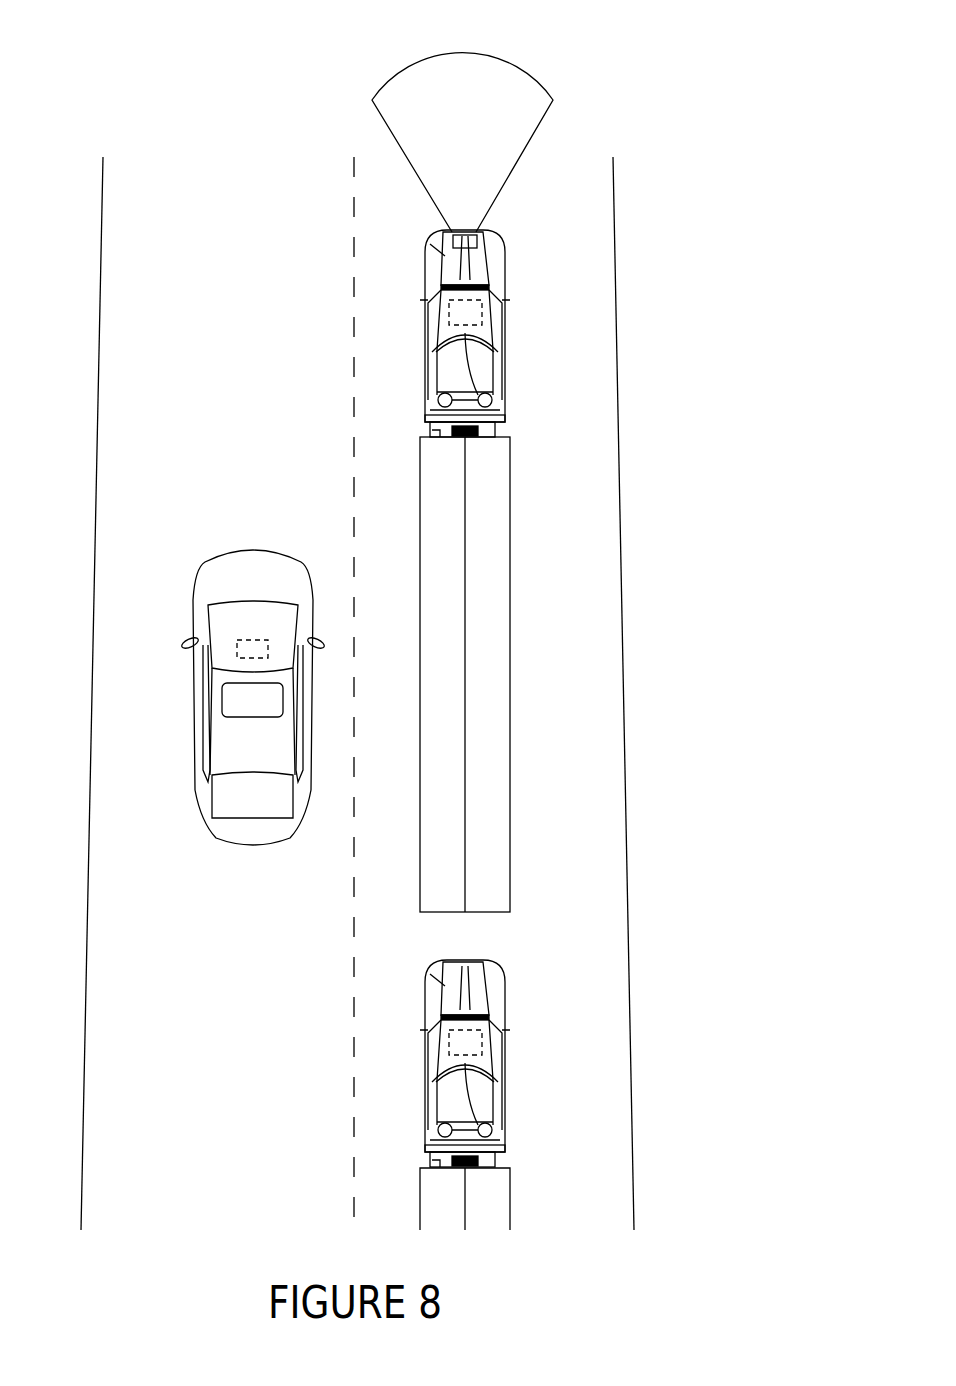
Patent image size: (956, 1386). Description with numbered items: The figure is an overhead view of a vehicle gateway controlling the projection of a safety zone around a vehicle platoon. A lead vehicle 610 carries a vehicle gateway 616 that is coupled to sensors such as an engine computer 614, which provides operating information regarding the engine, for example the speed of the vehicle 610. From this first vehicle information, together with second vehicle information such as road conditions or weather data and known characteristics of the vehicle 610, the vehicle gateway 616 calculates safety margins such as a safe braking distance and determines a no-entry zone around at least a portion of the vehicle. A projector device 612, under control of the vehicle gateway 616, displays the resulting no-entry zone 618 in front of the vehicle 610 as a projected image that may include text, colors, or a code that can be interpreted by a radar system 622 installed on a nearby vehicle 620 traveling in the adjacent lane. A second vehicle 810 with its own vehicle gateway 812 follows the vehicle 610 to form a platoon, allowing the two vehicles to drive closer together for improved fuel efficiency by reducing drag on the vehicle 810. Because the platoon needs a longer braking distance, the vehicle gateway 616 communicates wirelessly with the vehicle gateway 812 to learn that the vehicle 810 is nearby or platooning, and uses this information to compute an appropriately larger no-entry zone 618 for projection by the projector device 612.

The vehicle 610 is at (507, 537).
The projector device 612 is at (478, 233).
The engine computer 614 is at (488, 272).
The vehicle gateway 616 is at (490, 311).
The no-entry zone 618 is at (508, 176).
The vehicle 620 is at (193, 607).
The radar system 622 is at (238, 648).
The second vehicle 810 is at (505, 1075).
The vehicle gateway 812 is at (497, 1040).